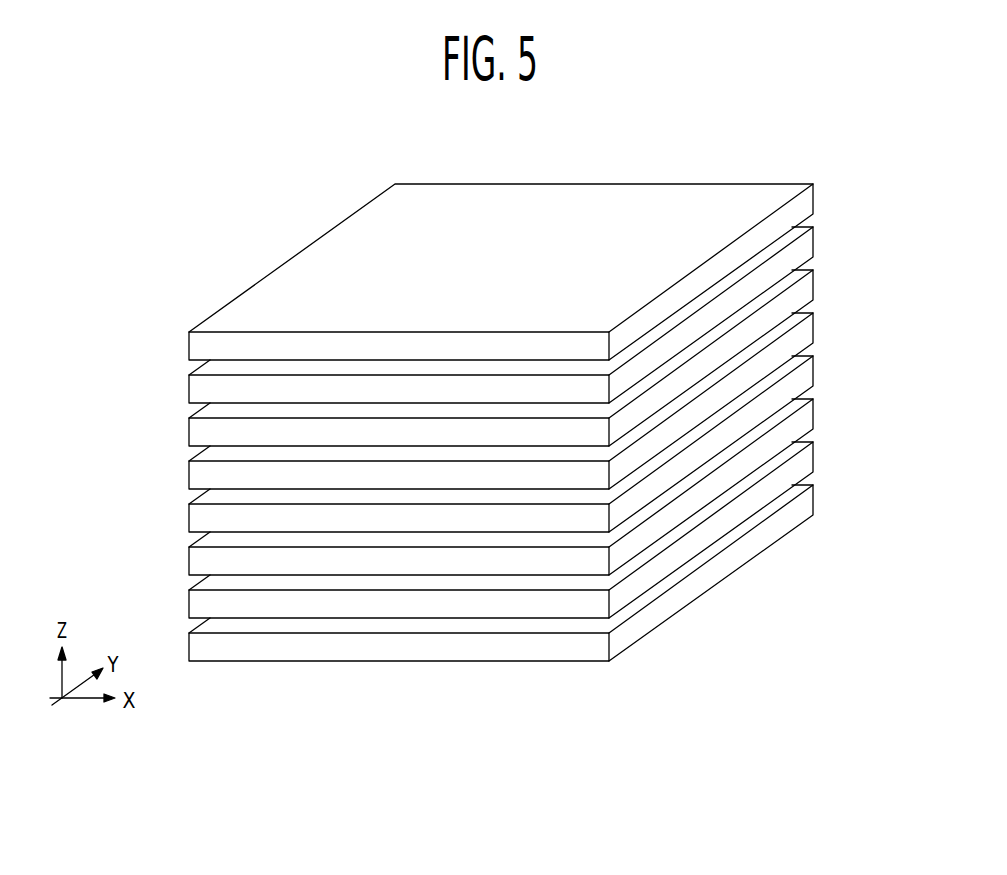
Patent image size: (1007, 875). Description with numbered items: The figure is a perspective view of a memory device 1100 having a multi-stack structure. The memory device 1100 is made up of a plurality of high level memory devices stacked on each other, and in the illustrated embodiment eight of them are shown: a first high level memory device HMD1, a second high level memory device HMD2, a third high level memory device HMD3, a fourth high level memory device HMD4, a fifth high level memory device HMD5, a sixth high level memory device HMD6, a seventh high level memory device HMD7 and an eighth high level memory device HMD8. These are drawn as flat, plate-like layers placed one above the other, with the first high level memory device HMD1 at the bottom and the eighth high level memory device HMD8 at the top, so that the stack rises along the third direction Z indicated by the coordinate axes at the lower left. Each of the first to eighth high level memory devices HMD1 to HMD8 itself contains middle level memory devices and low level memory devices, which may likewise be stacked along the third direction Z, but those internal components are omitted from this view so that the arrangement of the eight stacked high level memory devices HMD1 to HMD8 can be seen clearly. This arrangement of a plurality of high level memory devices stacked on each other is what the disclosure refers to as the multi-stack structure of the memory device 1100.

The memory device 1100 is at (555, 365).
The first high level memory device HMD1 is at (809, 502).
The second high level memory device HMD2 is at (809, 459).
The third high level memory device HMD3 is at (809, 416).
The fourth high level memory device HMD4 is at (809, 373).
The fifth high level memory device HMD5 is at (809, 330).
The sixth high level memory device HMD6 is at (809, 287).
The seventh high level memory device HMD7 is at (809, 244).
The eighth high level memory device HMD8 is at (809, 201).